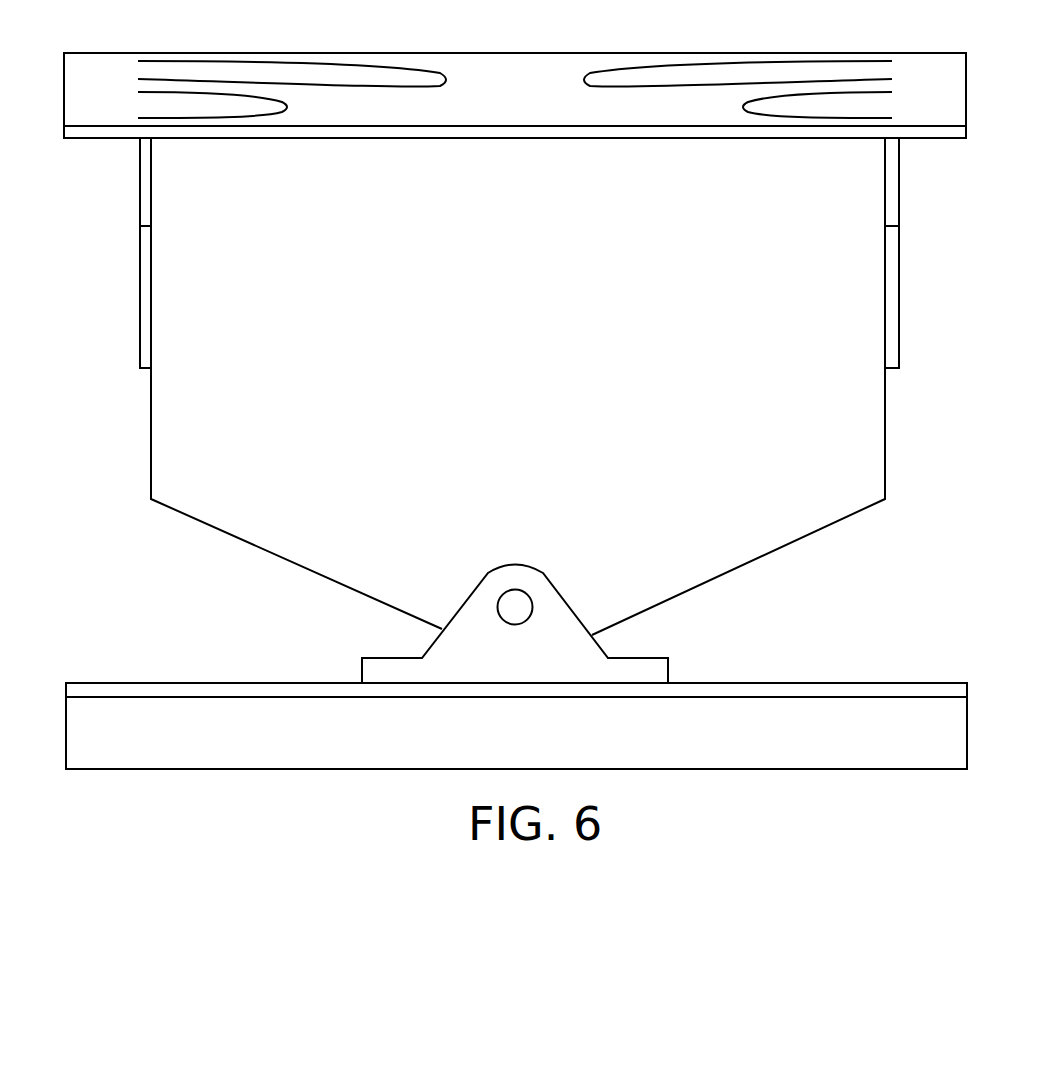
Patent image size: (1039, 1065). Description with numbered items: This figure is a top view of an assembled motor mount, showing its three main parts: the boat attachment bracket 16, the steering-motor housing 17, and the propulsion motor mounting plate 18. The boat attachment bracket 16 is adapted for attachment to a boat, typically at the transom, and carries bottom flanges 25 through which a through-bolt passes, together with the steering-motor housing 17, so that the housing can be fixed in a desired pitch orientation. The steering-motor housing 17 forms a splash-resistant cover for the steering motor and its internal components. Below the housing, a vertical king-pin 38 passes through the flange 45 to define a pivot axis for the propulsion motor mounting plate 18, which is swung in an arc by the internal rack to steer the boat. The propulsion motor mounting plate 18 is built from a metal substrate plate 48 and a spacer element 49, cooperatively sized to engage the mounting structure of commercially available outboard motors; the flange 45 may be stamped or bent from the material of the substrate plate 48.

The boat attachment bracket 16 is at (943, 139).
The bottom flanges 25 is at (148, 276).
The steering-motor housing 17 is at (648, 524).
The flange 45 is at (567, 657).
The king-pin 38 is at (510, 607).
The propulsion motor mounting plate 18 is at (552, 662).
The metal substrate plate 48 is at (147, 693).
The spacer element 49 is at (953, 729).